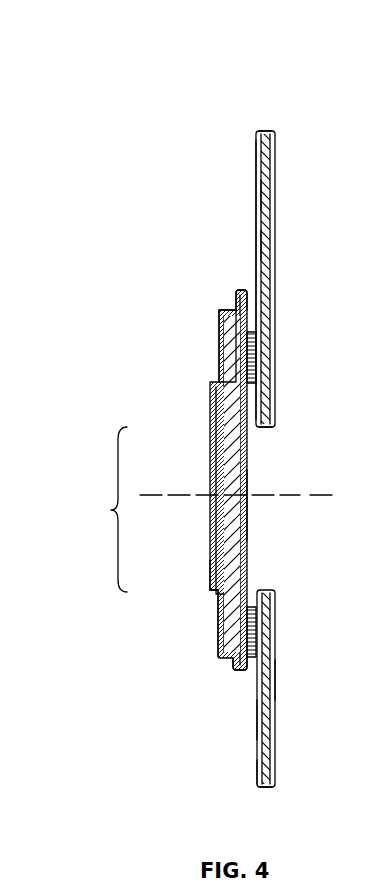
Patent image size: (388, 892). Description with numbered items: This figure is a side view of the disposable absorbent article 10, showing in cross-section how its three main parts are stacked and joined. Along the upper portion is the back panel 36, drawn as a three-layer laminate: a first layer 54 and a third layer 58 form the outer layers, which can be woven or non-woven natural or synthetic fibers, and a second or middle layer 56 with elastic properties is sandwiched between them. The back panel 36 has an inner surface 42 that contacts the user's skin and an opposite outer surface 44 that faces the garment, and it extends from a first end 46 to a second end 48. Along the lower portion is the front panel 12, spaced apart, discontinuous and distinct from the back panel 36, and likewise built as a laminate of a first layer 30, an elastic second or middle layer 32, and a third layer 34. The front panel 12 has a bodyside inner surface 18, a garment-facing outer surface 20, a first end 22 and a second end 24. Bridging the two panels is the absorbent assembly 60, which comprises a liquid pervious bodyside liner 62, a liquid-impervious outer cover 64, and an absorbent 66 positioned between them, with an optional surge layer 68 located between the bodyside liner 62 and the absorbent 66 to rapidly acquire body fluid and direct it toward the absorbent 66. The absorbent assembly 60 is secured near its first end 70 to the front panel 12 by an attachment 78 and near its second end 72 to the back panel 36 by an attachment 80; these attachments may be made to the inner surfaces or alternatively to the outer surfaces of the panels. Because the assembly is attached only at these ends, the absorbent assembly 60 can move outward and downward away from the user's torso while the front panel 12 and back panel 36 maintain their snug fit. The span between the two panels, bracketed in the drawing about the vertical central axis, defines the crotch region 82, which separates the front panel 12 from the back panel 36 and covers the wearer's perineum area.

The disposable absorbent article 10 is at (329, 105).
The front panel 12 is at (292, 720).
The inner surface 18 is at (258, 780).
The outer surface 20 is at (272, 750).
The first end 22 is at (268, 788).
The second end 24 is at (270, 590).
The first layer 30 is at (258, 714).
The second or middle layer 32 is at (263, 745).
The third layer 34 is at (276, 682).
The back panel 36 is at (281, 154).
The inner surface 42 is at (257, 157).
The outer surface 44 is at (271, 210).
The first end 46 is at (267, 131).
The second end 48 is at (266, 428).
The first layer 54 is at (259, 196).
The second or middle layer 56 is at (262, 243).
The third layer 58 is at (273, 287).
The absorbent assembly 60 is at (184, 294).
The bodyside liner 62 is at (212, 424).
The outer cover 64 is at (247, 505).
The absorbent 66 is at (232, 340).
The surge layer 68 is at (210, 562).
The first end 70 is at (236, 668).
The second end 72 is at (237, 290).
The attachment 78 is at (253, 610).
The attachment 80 is at (254, 395).
The crotch region 82 is at (103, 509).